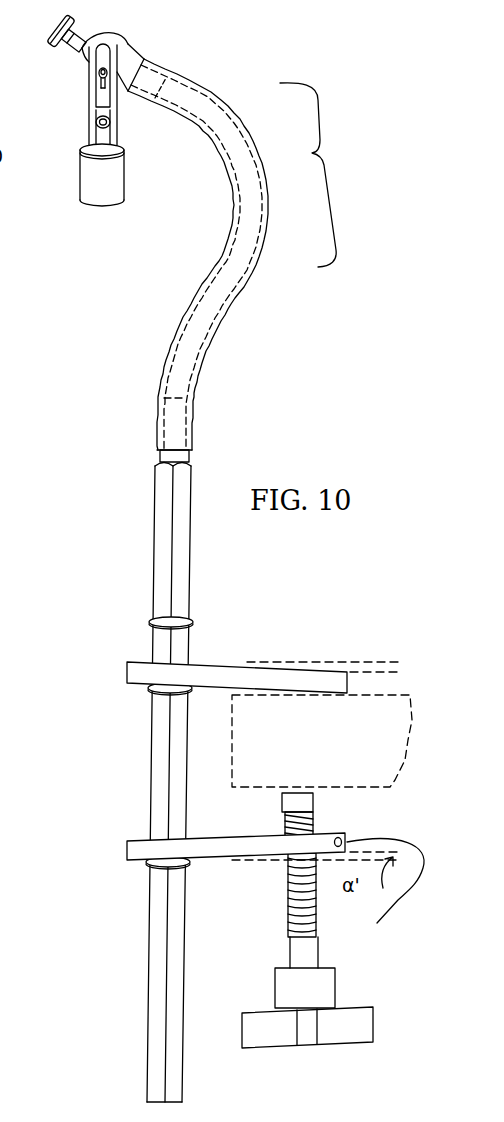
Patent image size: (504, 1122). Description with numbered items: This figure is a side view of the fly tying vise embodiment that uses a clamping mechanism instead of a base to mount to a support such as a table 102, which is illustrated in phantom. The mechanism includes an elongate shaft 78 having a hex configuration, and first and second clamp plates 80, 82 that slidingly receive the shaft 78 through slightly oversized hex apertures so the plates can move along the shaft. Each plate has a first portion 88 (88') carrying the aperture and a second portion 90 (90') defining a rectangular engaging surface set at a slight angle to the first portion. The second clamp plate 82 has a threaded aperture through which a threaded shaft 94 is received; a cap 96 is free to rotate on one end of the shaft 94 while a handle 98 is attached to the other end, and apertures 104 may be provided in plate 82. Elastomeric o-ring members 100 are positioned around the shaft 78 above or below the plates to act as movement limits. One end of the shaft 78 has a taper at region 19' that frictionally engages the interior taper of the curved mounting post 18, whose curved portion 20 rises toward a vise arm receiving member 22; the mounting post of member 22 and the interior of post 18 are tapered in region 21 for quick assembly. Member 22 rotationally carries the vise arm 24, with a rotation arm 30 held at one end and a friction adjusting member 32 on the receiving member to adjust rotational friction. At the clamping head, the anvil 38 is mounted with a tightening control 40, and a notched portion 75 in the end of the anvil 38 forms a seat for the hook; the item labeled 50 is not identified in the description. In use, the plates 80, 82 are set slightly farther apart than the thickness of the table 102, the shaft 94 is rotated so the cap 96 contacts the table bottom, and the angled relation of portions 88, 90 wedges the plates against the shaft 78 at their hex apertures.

The curved mounting post 18 is at (245, 283).
The taper region 19' is at (213, 426).
The curved portion 20 is at (316, 175).
The tapered region 21 is at (147, 52).
The vise arm receiving member 22 is at (133, 58).
The vise arm 24 is at (98, 62).
The rotation arm 30 is at (118, 118).
The friction adjusting member 32 is at (55, 20).
The anvil 38 is at (58, 198).
The tightening control 40 is at (112, 182).
The fastener 50 is at (0, 64).
The notched portion 75 is at (104, 83).
The elongate shaft 78 is at (162, 522).
The first clamp plate 80 is at (127, 672).
The second clamp plate 82 is at (127, 850).
The first portion 88 is at (220, 632).
The first portion 88' is at (205, 895).
The second portion 90 is at (322, 639).
The second portion 90' is at (316, 887).
The threaded shaft 94 is at (318, 820).
The cap 96 is at (316, 800).
The handle 98 is at (244, 1034).
The o-ring members 100 is at (150, 618).
The table 102 is at (240, 750).
The apertures 104 is at (378, 891).